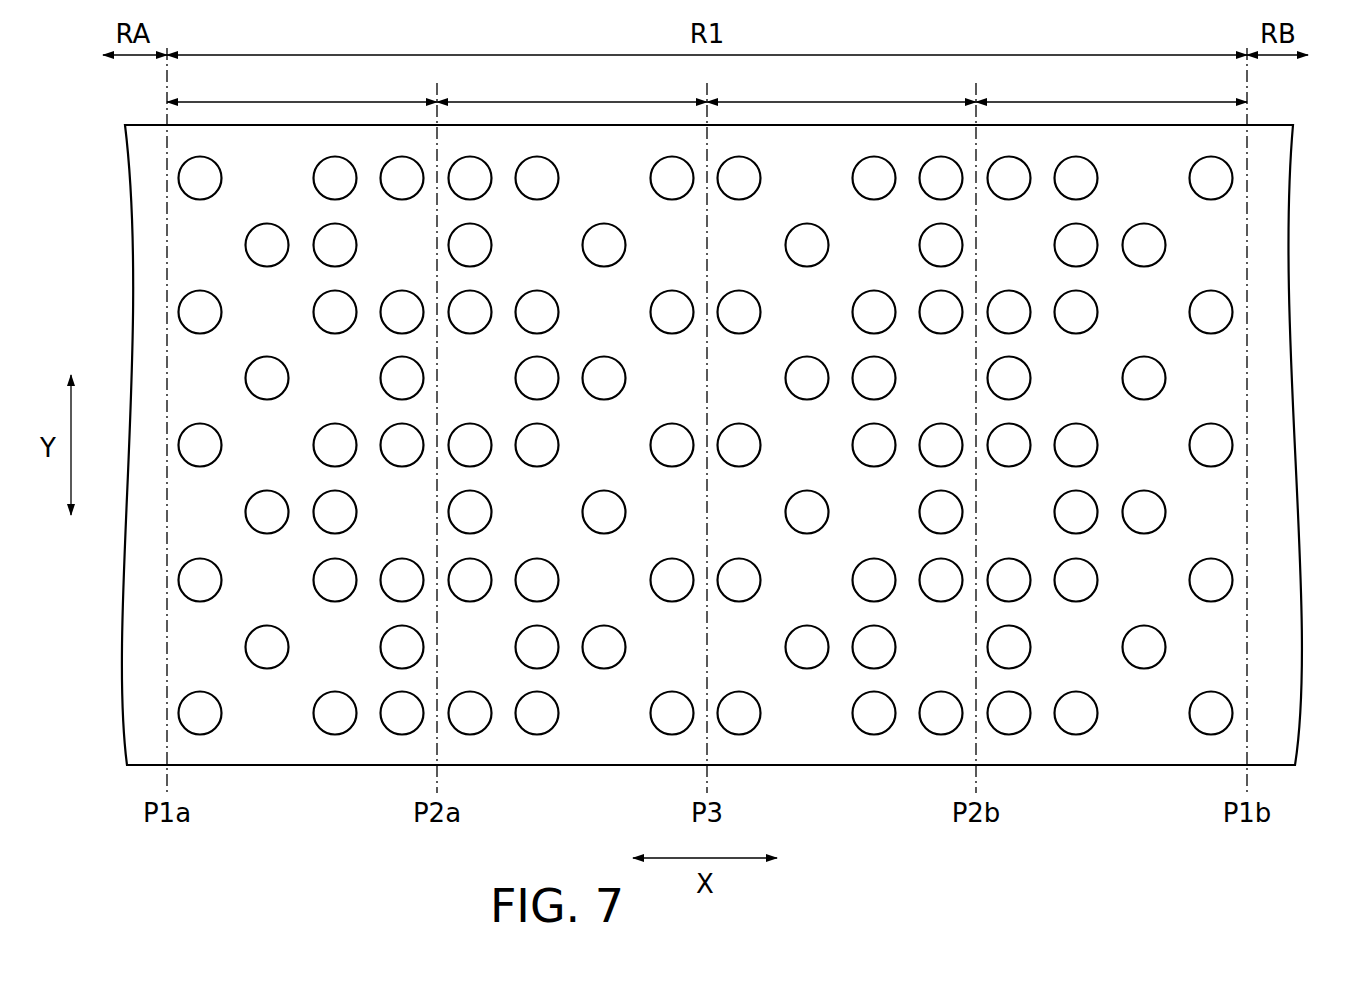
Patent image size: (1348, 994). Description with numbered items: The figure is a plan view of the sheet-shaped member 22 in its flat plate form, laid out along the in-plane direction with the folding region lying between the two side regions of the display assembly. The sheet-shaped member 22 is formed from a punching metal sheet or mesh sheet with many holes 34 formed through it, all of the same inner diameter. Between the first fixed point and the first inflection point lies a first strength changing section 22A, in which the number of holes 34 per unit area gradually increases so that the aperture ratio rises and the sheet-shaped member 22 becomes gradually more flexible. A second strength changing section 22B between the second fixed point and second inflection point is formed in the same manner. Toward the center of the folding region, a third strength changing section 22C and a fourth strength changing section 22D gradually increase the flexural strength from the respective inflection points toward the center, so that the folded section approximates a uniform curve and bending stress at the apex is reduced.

The sheet-shaped member 22 is at (60, 121).
The holes 34 is at (468, 243).
The first strength changing section 22A is at (302, 84).
The second strength changing section 22B is at (1111, 84).
The third strength changing section 22C is at (572, 84).
The fourth strength changing section 22D is at (841, 84).